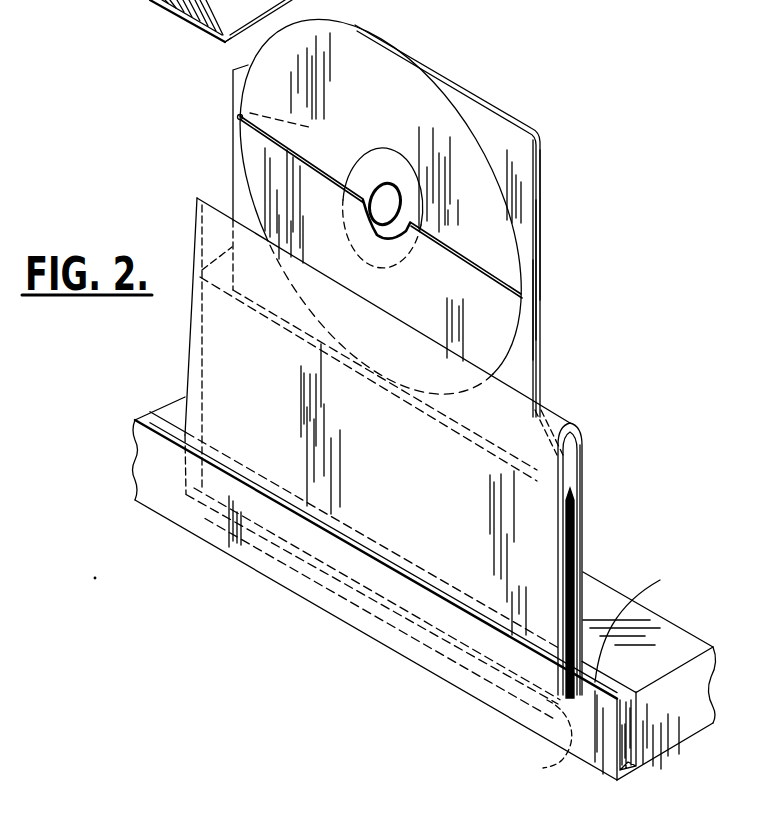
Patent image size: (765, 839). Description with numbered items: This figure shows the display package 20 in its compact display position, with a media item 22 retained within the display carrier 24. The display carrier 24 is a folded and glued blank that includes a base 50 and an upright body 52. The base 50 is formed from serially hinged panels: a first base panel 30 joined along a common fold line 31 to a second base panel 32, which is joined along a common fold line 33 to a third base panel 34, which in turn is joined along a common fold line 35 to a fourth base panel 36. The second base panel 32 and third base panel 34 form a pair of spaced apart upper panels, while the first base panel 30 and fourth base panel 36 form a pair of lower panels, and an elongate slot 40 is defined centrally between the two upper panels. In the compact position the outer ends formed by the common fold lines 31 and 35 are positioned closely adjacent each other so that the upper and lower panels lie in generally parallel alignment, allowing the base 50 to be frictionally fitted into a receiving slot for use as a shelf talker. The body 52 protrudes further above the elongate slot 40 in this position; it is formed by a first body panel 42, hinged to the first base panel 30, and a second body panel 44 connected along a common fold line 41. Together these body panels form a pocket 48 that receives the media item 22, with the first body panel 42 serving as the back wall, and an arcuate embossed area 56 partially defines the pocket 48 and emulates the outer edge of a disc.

The display package 20 is at (424, 431).
The media item 22 is at (430, 211).
The display carrier 24 is at (548, 241).
The first base panel 30 is at (570, 560).
The common fold line 31 is at (224, 46).
The second base panel 32 is at (222, 328).
The common fold line 33 is at (553, 412).
The third base panel 34 is at (580, 470).
The common fold line 35 is at (566, 752).
The fourth base panel 36 is at (587, 570).
The elongate slot 40 is at (507, 390).
The common fold line 41 is at (511, 124).
The first body panel 42 is at (537, 267).
The second body panel 44 is at (464, 100).
The pocket 48 is at (434, 308).
The base 50 is at (586, 530).
The body 52 is at (541, 297).
The embossed area 56 is at (255, 153).